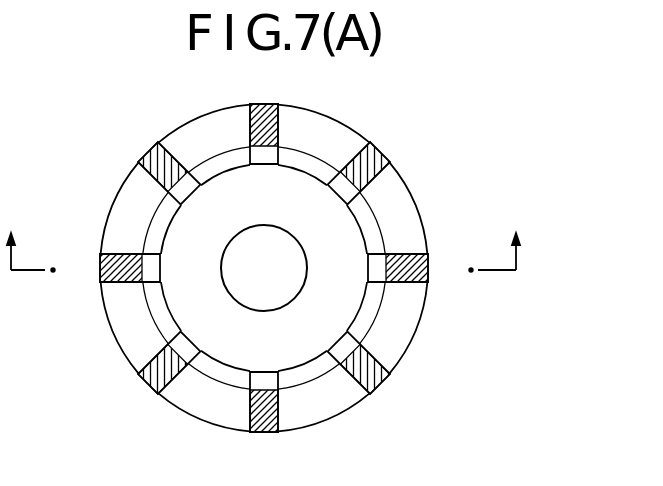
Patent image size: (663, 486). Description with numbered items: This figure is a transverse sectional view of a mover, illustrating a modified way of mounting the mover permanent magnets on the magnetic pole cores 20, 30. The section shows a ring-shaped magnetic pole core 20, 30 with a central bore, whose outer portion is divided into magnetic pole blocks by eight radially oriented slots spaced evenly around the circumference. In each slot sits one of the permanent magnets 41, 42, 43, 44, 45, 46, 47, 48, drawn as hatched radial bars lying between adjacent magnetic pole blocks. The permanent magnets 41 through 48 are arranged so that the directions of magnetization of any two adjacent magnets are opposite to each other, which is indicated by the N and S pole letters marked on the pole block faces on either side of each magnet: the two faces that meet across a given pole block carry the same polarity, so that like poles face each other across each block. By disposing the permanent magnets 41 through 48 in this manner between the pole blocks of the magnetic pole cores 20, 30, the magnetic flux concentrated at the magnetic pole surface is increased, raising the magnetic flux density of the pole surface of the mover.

The magnetic pole core 20 is at (424, 206).
The magnetic pole core 30 is at (342, 111).
The permanent magnet 41 is at (260, 110).
The permanent magnet 42 is at (383, 151).
The permanent magnet 43 is at (428, 268).
The permanent magnet 44 is at (379, 386).
The permanent magnet 45 is at (262, 433).
The permanent magnet 46 is at (148, 381).
The permanent magnet 47 is at (100, 268).
The permanent magnet 48 is at (150, 151).